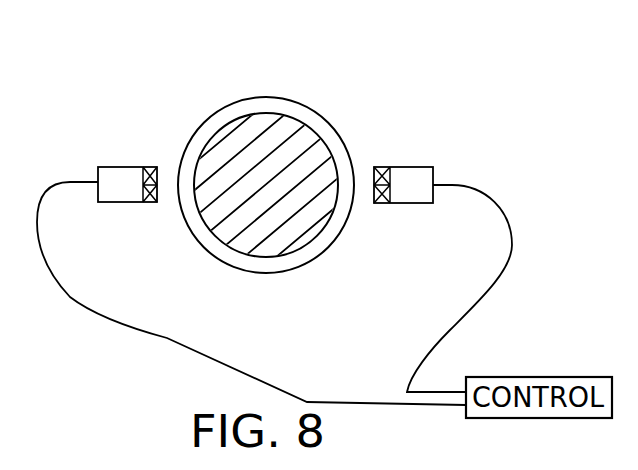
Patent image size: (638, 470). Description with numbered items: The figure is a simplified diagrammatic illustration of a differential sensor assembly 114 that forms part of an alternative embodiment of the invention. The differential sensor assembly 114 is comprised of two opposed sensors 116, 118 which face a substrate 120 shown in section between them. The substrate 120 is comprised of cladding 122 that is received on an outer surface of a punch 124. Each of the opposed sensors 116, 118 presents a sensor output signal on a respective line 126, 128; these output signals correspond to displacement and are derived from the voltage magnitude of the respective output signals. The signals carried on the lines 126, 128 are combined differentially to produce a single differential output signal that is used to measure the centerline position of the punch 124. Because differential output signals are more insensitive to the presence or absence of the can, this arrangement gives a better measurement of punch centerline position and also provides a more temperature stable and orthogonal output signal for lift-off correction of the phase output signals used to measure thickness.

The differential sensor assembly 114 is at (197, 108).
The sensor 116 is at (125, 203).
The sensor 118 is at (423, 204).
The substrate 120 is at (252, 93).
The cladding 122 is at (298, 108).
The punch 124 is at (308, 141).
The line 126 is at (170, 337).
The line 128 is at (512, 250).